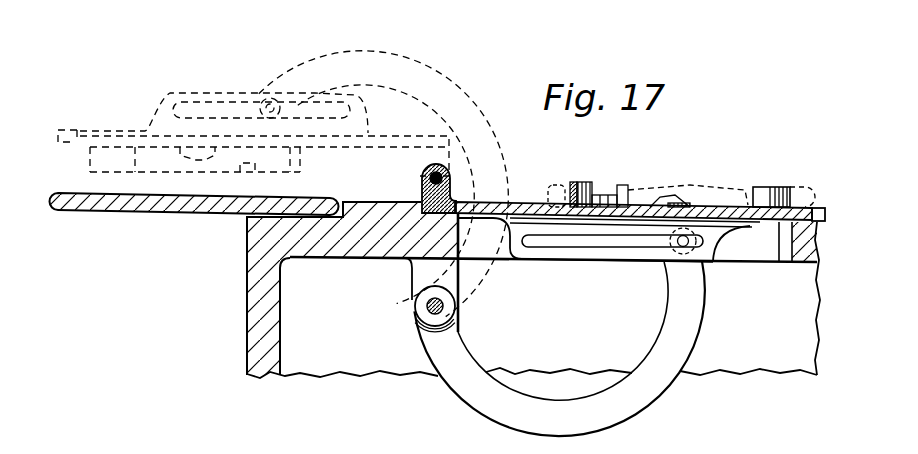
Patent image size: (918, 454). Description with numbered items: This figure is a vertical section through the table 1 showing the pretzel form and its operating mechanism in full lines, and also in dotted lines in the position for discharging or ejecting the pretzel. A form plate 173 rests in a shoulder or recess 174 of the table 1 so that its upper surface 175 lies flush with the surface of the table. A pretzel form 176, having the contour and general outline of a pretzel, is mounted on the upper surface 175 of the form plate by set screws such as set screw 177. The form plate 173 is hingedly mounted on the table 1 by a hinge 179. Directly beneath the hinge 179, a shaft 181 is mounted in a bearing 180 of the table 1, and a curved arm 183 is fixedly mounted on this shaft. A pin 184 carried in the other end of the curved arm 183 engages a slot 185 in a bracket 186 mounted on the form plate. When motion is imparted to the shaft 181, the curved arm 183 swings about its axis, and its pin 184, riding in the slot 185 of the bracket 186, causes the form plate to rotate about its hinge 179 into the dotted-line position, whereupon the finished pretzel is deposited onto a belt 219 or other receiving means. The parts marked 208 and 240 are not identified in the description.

The table 1 is at (253, 262).
The form plate 173 is at (779, 262).
The shoulder or recess 174 is at (459, 260).
The upper surface of form plate 175 is at (496, 201).
The pretzel form 176 is at (772, 200).
The set screw 177 is at (675, 200).
The hinge 179 is at (430, 181).
The bearing 180 is at (422, 277).
The shaft 181 is at (427, 312).
The curved arm 183 is at (643, 393).
The pin 184 is at (680, 248).
The slot 185 is at (627, 248).
The bracket 186 is at (580, 259).
The spring 208 is at (551, 185).
The belt 219 is at (178, 207).
The cam 240 is at (612, 186).